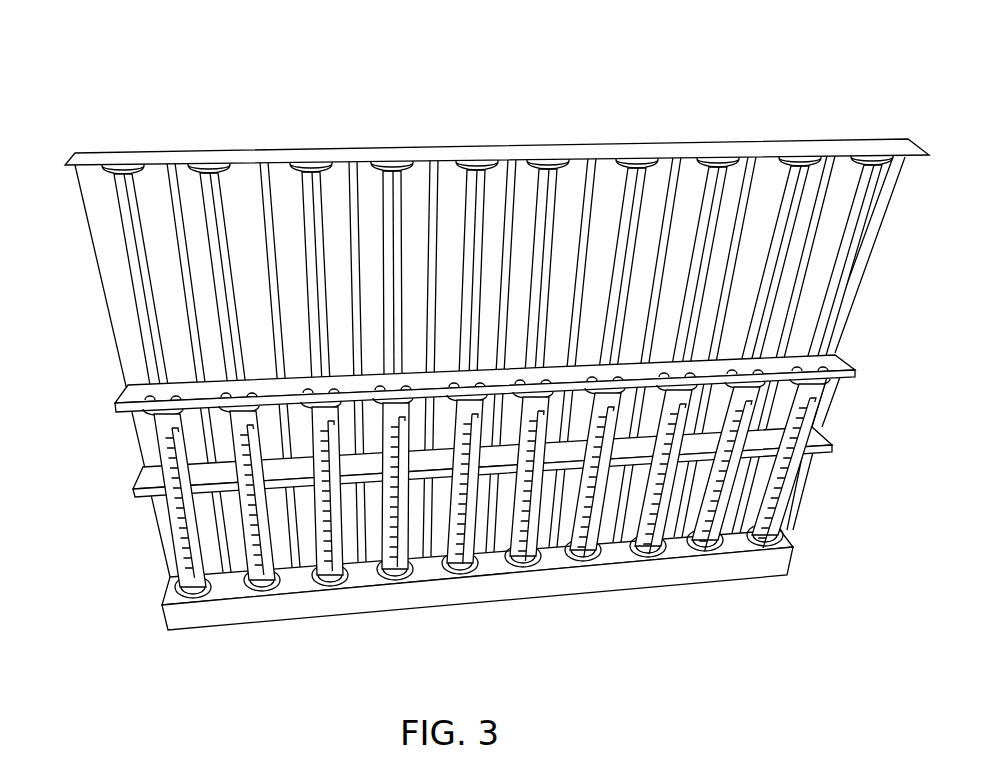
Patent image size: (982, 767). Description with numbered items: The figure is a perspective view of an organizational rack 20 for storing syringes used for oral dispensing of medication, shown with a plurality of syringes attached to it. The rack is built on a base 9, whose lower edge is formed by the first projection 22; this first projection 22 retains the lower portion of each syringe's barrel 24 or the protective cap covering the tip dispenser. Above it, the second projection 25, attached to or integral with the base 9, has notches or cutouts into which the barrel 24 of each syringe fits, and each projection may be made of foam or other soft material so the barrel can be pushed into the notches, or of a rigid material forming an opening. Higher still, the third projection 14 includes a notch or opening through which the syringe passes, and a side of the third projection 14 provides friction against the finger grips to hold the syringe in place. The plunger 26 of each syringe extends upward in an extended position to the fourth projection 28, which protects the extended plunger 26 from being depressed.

The base 9 is at (105, 246).
The third projection 14 is at (842, 358).
The rack 20 is at (484, 359).
The first projection 22 is at (792, 542).
The barrel 24 is at (823, 410).
The second projection 25 is at (820, 448).
The plunger 26 is at (848, 280).
The fourth projection 28 is at (865, 148).